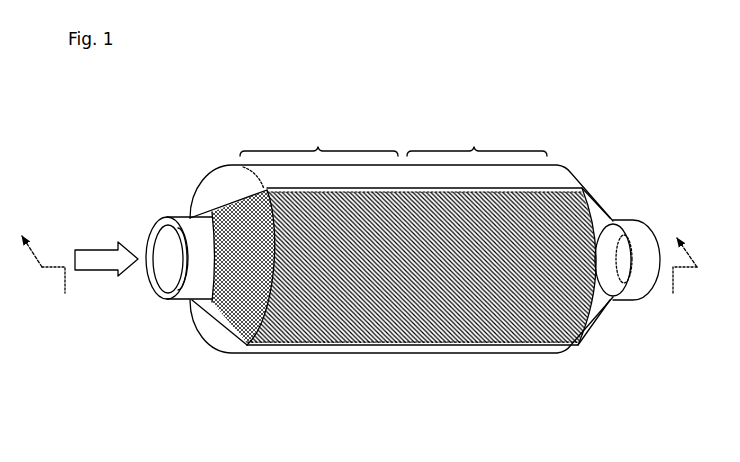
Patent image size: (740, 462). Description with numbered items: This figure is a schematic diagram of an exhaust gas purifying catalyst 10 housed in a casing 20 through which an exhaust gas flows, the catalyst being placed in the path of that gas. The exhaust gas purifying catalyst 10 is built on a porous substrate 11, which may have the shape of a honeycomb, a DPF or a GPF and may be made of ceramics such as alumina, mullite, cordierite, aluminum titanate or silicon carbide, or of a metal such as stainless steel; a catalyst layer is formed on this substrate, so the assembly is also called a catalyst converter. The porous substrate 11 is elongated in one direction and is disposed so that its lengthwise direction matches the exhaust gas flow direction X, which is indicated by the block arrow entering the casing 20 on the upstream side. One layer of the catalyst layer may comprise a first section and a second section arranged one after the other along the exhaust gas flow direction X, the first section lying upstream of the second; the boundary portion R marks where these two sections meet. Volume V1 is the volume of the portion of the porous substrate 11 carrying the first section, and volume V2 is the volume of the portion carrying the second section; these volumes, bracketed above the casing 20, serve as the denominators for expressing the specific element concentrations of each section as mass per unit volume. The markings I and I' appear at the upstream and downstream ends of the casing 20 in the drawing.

The exhaust gas purifying catalyst 10 is at (578, 340).
The porous substrate 11 is at (226, 318).
The casing 20 is at (445, 178).
The boundary portion R is at (438, 192).
The volume V1 is at (319, 137).
The volume V2 is at (477, 141).
The exhaust gas flow direction X is at (97, 262).
The section line I is at (42, 264).
The section line I' is at (686, 255).